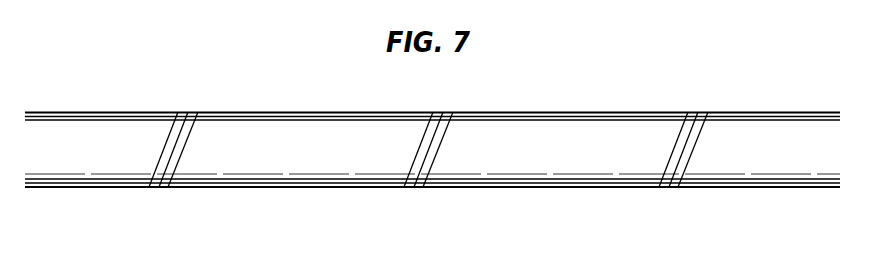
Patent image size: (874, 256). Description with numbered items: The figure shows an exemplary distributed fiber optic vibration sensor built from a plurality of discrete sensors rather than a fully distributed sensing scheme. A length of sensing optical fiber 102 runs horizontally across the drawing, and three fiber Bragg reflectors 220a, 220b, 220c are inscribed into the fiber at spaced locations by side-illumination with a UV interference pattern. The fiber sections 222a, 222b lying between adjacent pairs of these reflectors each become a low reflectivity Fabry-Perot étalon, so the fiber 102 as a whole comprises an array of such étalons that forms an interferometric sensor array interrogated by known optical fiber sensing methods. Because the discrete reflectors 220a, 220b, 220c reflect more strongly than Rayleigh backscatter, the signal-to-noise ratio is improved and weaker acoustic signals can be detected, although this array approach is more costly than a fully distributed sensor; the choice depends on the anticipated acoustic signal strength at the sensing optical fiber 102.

The sensing optical fiber 102 is at (134, 91).
The fiber Bragg reflector 220a is at (200, 160).
The fiber Bragg reflector 220b is at (455, 160).
The fiber Bragg reflector 220c is at (710, 160).
The fiber section 222a is at (332, 160).
The fiber section 222b is at (587, 160).